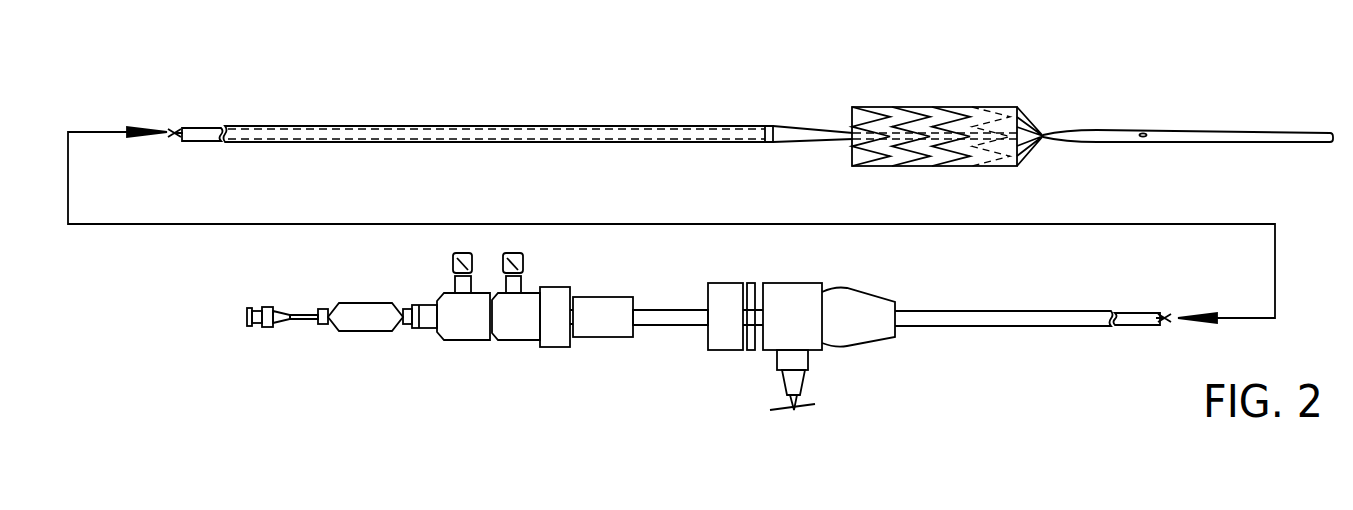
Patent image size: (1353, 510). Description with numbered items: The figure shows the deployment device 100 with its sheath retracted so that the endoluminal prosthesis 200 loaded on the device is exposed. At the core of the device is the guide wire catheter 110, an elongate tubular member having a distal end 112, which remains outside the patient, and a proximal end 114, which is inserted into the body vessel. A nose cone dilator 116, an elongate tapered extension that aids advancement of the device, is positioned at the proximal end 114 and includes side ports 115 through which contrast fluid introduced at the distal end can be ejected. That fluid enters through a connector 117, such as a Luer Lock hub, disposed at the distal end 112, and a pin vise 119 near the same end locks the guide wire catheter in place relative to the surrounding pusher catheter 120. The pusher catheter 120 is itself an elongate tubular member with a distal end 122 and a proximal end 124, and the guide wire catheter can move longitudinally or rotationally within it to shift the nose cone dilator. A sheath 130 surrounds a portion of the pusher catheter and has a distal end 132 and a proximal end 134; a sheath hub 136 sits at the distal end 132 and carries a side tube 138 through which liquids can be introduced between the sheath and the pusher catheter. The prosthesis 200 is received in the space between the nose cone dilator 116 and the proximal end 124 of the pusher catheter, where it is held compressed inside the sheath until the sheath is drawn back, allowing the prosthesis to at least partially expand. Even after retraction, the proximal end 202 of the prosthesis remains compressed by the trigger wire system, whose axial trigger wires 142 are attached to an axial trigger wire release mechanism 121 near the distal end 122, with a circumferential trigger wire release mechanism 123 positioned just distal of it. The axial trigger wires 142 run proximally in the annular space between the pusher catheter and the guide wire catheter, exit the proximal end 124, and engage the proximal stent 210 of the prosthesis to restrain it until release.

The deployment device 100 is at (608, 88).
The guide wire catheter 110 is at (170, 131).
The distal end 112 is at (232, 330).
The proximal end 114 is at (1316, 122).
The side ports 115 is at (1142, 133).
The nose cone dilator 116 is at (1272, 128).
The connector 117 is at (267, 307).
The pin vise 119 is at (365, 331).
The pusher catheter 120 is at (203, 127).
The axial trigger wire release mechanism 121 is at (520, 340).
The distal end 122 is at (635, 322).
The circumferential trigger wire release mechanism 123 is at (468, 340).
The proximal end 124 is at (797, 128).
The sheath 130 is at (718, 127).
The distal end 132 is at (897, 327).
The proximal end 134 is at (770, 138).
The sheath hub 136 is at (847, 338).
The side tube 138 is at (775, 352).
The axial trigger wires 142 is at (176, 128).
The endoluminal prosthesis 200 is at (968, 107).
The proximal end 202 is at (1052, 142).
The proximal stent 210 is at (1043, 133).